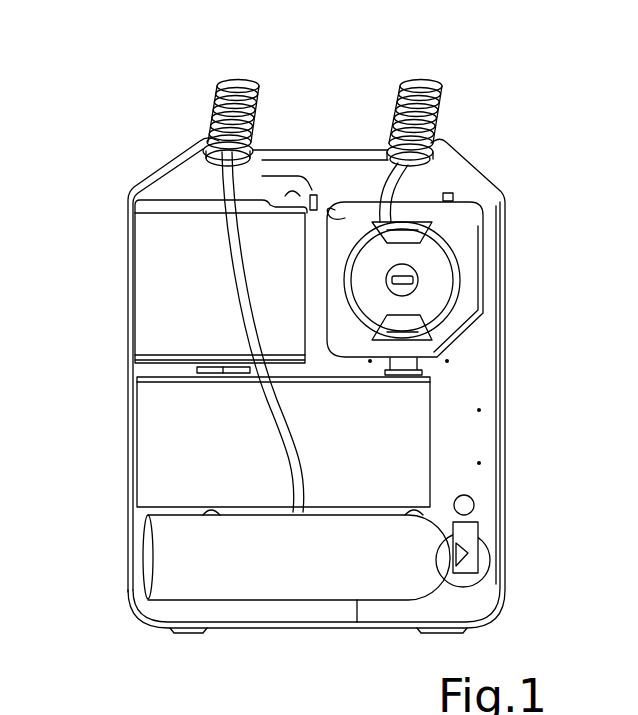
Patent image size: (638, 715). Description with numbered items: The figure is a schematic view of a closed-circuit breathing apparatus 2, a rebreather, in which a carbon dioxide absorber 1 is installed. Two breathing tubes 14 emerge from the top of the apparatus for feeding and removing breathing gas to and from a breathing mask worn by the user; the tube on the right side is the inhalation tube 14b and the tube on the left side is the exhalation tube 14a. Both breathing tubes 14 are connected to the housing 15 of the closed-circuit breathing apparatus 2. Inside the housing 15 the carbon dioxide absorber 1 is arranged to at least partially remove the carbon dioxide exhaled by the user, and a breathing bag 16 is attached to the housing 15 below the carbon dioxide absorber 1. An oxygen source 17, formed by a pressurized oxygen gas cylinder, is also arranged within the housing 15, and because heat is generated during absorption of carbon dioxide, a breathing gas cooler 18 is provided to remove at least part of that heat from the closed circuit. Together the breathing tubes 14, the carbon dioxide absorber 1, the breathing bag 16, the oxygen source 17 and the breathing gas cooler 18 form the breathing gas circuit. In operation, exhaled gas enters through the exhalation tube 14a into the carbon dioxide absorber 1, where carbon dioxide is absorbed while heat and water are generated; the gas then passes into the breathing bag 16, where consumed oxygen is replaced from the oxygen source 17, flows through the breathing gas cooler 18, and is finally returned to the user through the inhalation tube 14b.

The carbon dioxide absorber 1 is at (153, 282).
The closed-circuit breathing apparatus 2 is at (122, 135).
The breathing tubes 14 is at (387, 107).
The exhalation tube 14a is at (240, 92).
The inhalation tube 14b is at (419, 90).
The housing 15 is at (508, 383).
The breathing bag 16 is at (160, 440).
The oxygen source 17 is at (323, 570).
The breathing gas cooler 18 is at (430, 283).